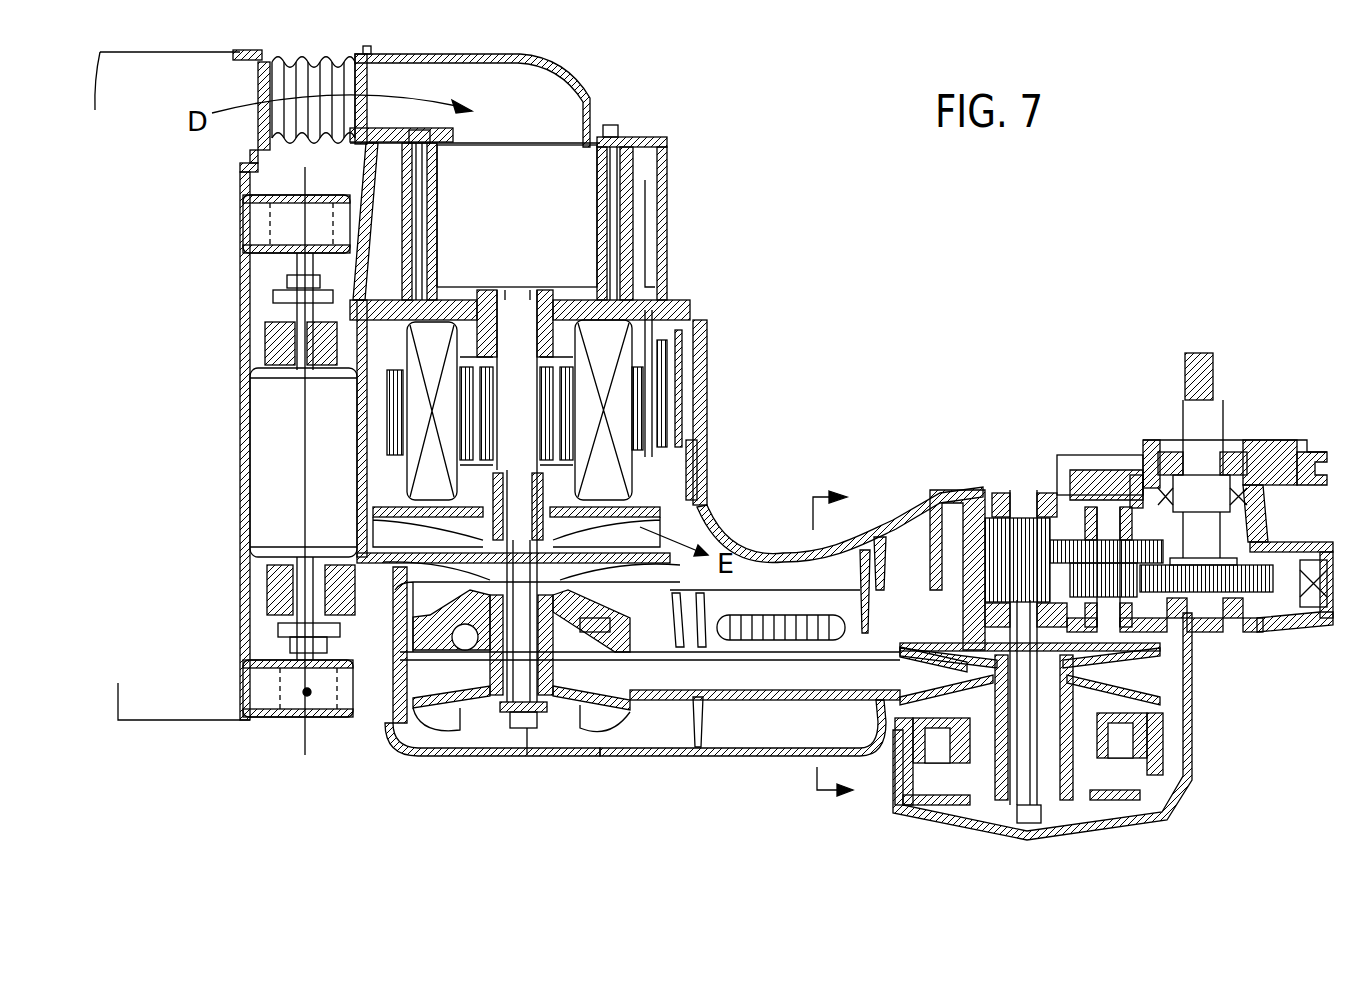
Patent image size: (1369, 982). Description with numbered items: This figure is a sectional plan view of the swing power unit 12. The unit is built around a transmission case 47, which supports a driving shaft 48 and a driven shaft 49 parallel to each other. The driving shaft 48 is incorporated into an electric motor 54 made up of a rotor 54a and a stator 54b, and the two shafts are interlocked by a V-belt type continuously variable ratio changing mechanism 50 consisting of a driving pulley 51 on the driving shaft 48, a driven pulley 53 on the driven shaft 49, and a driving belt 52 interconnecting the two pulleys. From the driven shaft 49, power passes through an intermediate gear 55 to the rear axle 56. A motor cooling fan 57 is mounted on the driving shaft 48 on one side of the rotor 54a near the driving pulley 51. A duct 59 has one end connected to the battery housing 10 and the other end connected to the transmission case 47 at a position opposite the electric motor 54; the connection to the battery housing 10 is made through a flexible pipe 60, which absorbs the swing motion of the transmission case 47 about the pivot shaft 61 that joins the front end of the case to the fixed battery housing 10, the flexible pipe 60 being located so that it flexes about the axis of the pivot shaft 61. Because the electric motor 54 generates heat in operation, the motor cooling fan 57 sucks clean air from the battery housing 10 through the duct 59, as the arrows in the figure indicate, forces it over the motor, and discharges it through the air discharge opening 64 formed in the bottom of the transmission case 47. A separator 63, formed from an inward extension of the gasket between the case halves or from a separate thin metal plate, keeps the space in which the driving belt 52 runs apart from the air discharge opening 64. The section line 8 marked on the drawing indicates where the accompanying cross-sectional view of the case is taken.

The section line 8- 8 is at (833, 649).
The battery housing 10 is at (240, 310).
The swing power unit 12 is at (484, 771).
The transmission case 47 is at (775, 740).
The driving shaft 48 is at (528, 728).
The driven shaft 49 is at (1027, 503).
The V-belt type continuously variable ratio changing mechanism 50 is at (630, 777).
The driving pulley 51 is at (412, 740).
The driving belt 52 is at (747, 700).
The driven pulley 53 is at (1192, 700).
The electric motor 54 is at (716, 312).
The rotor 54a is at (592, 337).
The stator 54b is at (667, 398).
The intermediate gear 55 is at (1130, 477).
The rear axle 56 is at (1203, 352).
The motor cooling fan 57 is at (700, 522).
The duct 59 is at (538, 80).
The flexible pipe 60 is at (307, 62).
The pivot shaft 61 is at (307, 692).
The separator 63 is at (850, 645).
The air discharge opening 64 is at (790, 622).